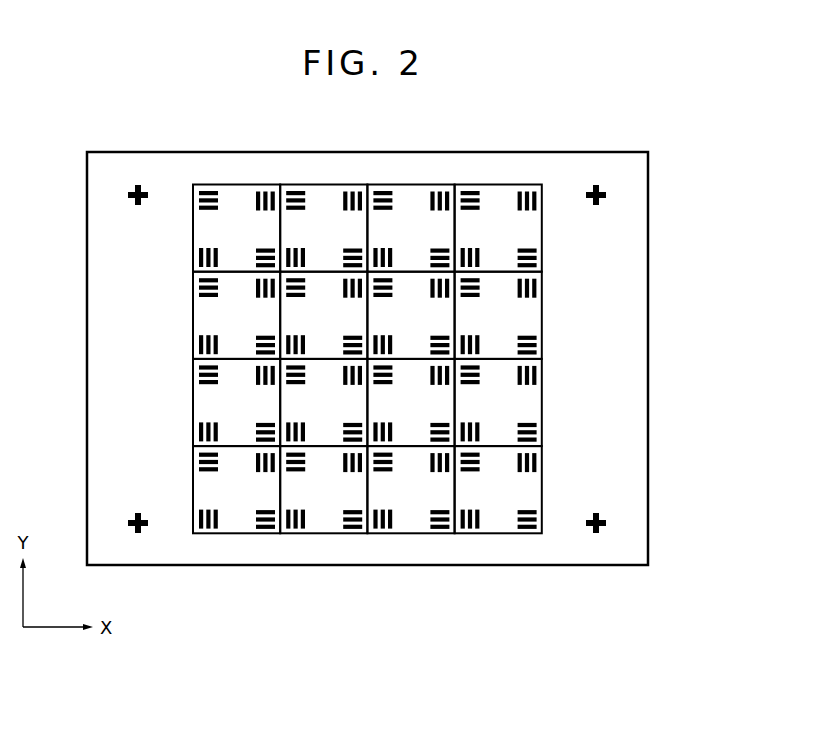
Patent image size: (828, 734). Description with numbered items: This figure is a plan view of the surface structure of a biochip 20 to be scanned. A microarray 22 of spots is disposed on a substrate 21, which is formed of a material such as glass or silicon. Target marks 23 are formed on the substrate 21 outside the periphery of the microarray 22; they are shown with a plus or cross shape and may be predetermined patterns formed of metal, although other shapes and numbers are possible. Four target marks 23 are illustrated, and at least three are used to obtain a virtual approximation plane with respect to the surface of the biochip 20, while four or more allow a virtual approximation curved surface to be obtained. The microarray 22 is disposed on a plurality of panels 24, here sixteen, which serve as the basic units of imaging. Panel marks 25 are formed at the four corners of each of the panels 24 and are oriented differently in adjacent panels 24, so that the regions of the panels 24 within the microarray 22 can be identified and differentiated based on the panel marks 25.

The biochip 20 is at (397, 383).
The substrate 21 is at (397, 335).
The microarray 22 is at (450, 319).
The target marks 23 is at (138, 187).
The panels 24 is at (237, 189).
The panel marks 25 is at (211, 190).